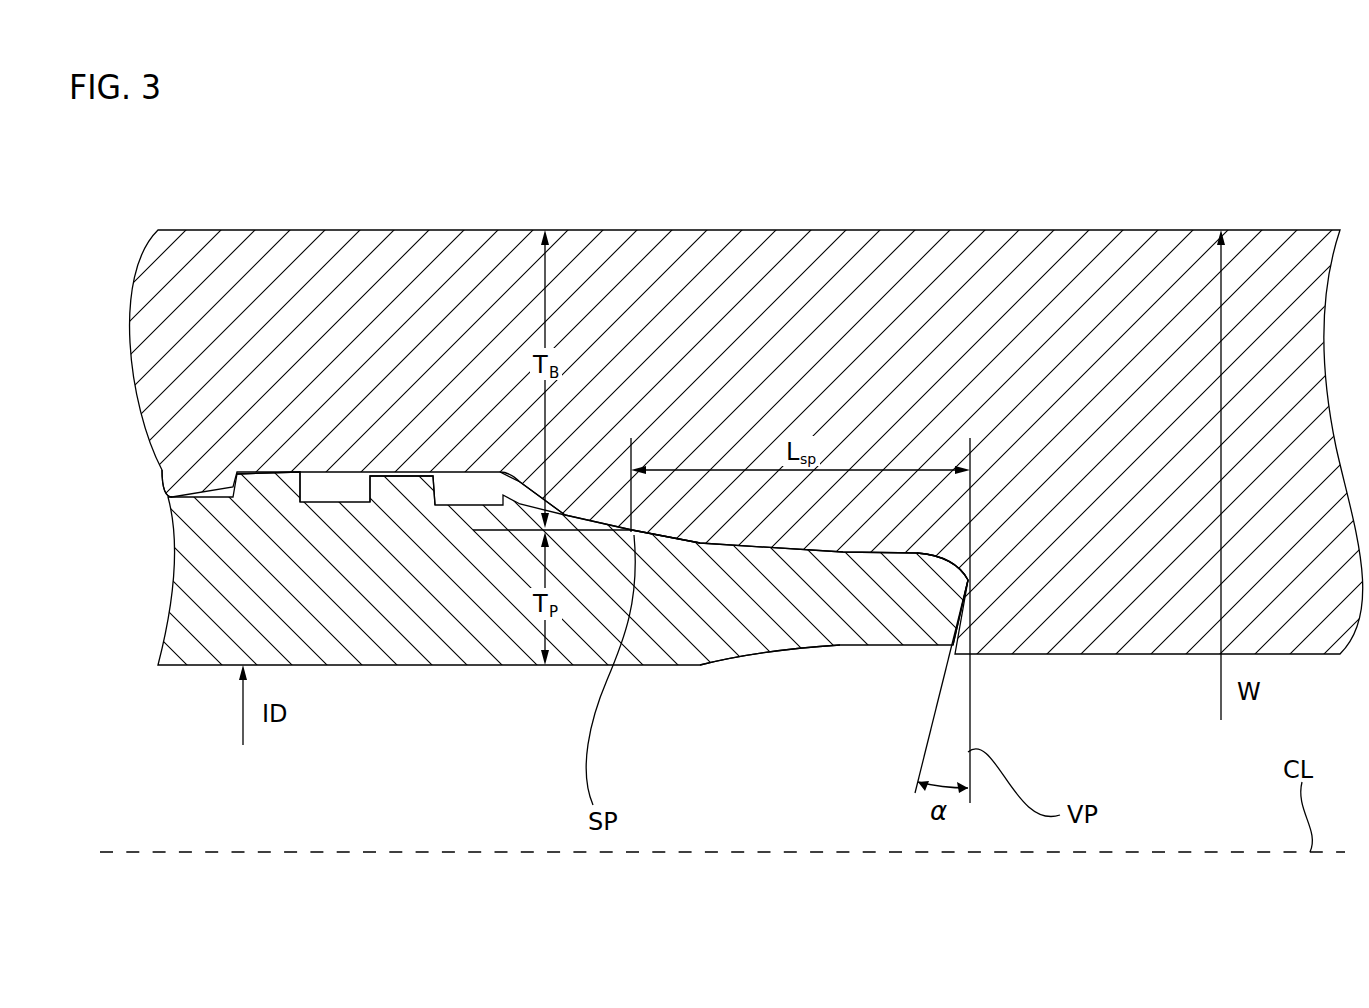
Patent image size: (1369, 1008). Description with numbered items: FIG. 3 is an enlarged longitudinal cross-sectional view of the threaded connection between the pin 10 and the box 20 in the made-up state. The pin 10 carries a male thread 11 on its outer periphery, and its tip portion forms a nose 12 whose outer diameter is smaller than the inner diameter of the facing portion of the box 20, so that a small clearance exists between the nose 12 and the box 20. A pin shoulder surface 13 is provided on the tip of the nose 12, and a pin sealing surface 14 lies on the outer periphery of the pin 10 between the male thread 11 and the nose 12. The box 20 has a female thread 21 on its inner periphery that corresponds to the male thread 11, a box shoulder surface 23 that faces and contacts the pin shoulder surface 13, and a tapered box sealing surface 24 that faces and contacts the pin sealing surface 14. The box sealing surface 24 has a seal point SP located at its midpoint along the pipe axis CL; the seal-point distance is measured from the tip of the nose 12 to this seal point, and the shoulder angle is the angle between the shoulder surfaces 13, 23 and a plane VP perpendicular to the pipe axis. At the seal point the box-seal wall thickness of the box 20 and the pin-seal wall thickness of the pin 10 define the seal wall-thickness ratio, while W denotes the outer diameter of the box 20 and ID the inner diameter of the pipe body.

The pin 10 is at (375, 685).
The male thread 11 is at (398, 503).
The nose 12 is at (790, 620).
The pin shoulder surface 13 is at (968, 628).
The pin sealing surface 14 is at (583, 523).
The box 20 is at (1021, 209).
The female thread 21 is at (203, 463).
The box shoulder surface 23 is at (955, 633).
The box sealing surface 24 is at (683, 537).